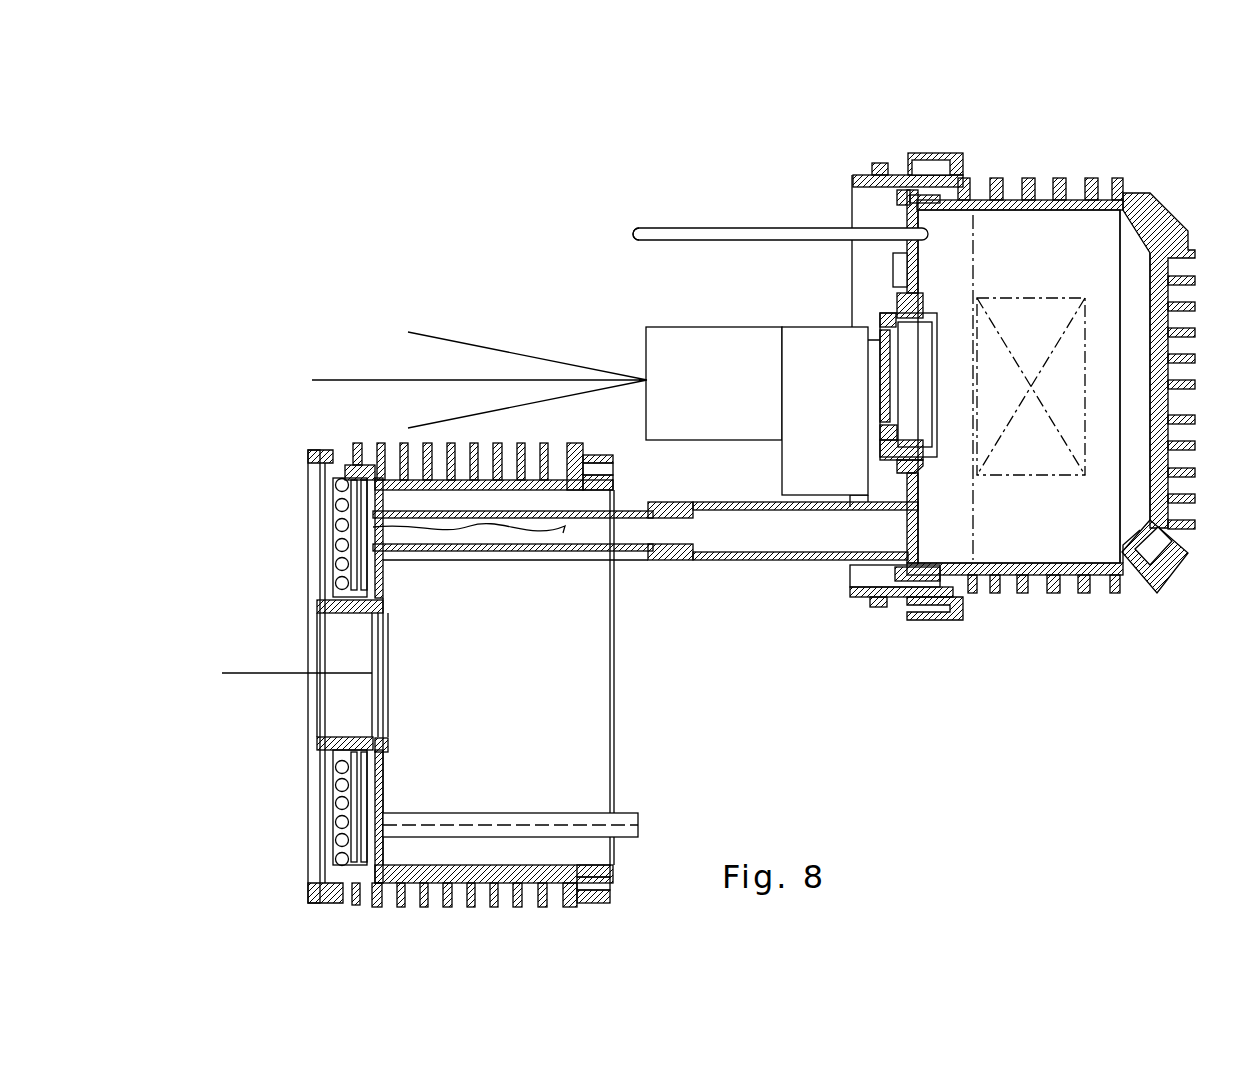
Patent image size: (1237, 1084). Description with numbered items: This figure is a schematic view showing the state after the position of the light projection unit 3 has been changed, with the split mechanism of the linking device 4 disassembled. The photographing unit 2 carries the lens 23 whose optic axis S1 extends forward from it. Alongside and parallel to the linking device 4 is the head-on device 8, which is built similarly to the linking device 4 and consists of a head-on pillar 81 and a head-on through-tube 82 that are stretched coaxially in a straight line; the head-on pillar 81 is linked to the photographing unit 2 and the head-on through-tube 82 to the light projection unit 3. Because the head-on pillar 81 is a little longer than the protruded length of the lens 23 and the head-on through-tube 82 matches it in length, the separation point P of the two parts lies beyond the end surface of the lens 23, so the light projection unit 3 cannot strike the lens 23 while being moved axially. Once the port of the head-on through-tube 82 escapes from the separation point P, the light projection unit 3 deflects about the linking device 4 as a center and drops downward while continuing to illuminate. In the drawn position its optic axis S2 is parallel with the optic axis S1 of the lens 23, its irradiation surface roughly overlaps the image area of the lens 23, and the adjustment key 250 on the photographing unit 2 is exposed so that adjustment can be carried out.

The head-on device 8 is at (697, 183).
The photographing unit 2 is at (1072, 167).
The adjustment key 250 is at (897, 262).
The head-on pillar 81 is at (770, 238).
The separation point P is at (630, 222).
The lens 23 is at (665, 352).
The optic axis of the lens S1 is at (467, 380).
The linking device 4 is at (675, 572).
The light projection unit 3 is at (298, 818).
The optic axis of the light projection unit S2 is at (283, 675).
The head-on through-tube 82 is at (620, 815).